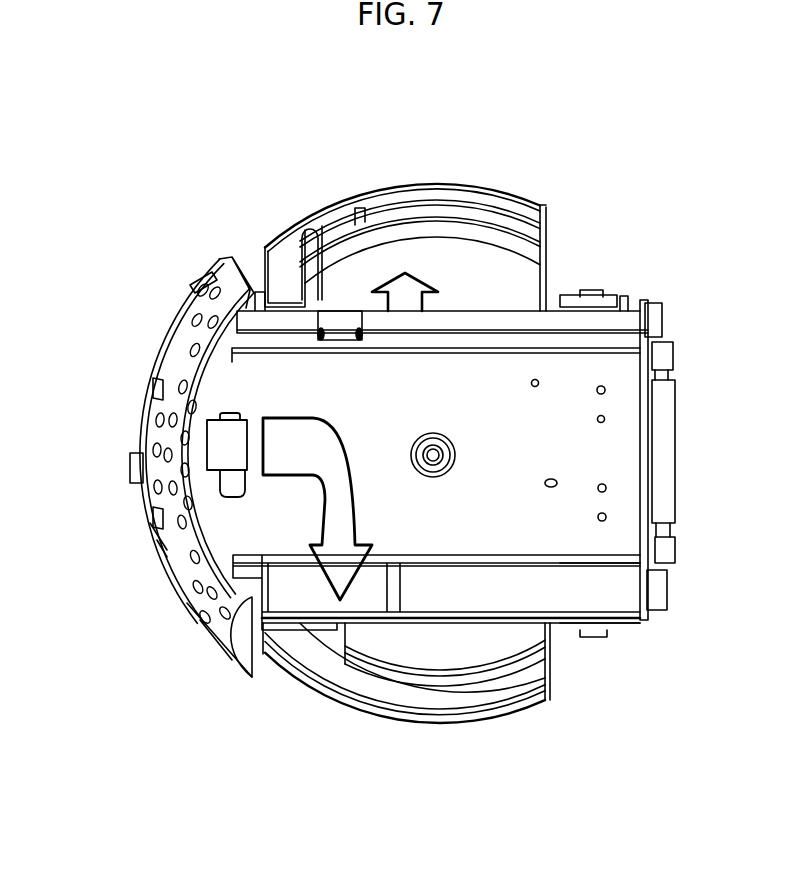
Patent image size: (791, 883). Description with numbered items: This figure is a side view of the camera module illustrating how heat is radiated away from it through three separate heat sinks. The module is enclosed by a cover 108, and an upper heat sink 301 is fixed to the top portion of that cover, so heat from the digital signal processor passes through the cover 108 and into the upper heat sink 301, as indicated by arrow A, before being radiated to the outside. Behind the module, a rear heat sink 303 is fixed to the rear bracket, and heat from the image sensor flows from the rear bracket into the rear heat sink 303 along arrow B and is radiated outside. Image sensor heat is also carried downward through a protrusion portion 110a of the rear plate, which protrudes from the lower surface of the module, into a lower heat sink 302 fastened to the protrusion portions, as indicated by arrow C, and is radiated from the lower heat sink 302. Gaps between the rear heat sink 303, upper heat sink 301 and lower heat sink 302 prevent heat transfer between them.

The cover 108 is at (287, 308).
The upper heat sink 301 is at (441, 185).
The lower heat sink 302 is at (440, 723).
The rear heat sink 303 is at (148, 384).
The protrusion portion 110a is at (250, 590).
The arrow A is at (402, 268).
The arrow B is at (200, 450).
The arrow C is at (338, 602).